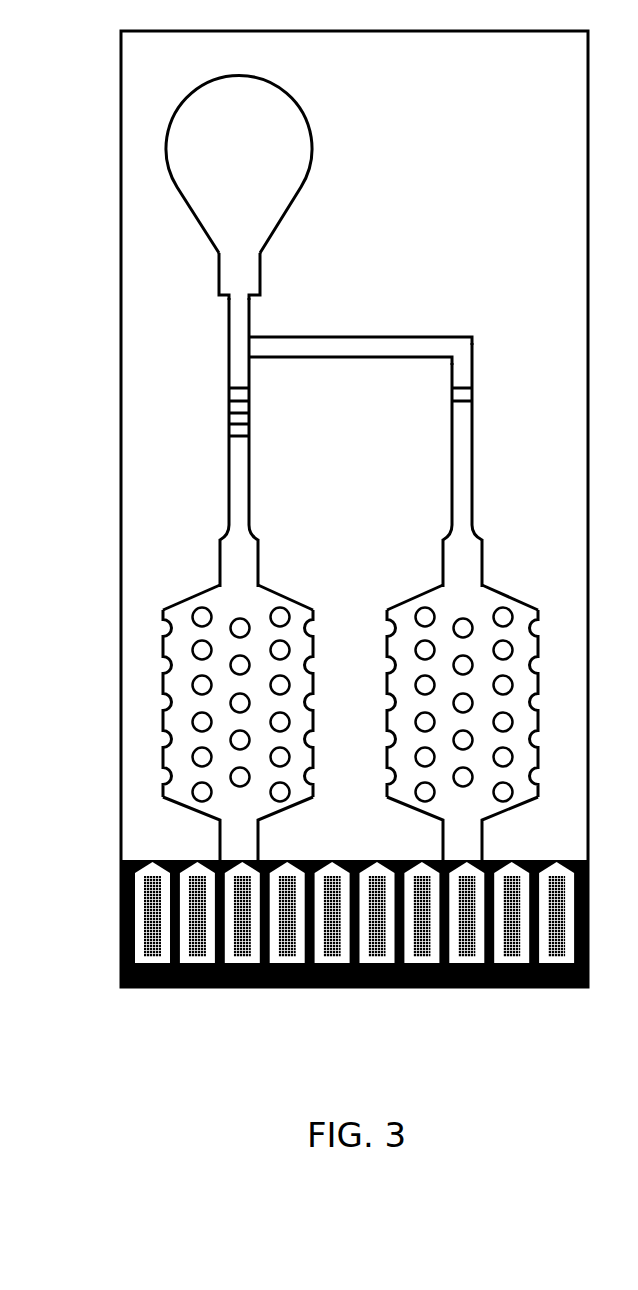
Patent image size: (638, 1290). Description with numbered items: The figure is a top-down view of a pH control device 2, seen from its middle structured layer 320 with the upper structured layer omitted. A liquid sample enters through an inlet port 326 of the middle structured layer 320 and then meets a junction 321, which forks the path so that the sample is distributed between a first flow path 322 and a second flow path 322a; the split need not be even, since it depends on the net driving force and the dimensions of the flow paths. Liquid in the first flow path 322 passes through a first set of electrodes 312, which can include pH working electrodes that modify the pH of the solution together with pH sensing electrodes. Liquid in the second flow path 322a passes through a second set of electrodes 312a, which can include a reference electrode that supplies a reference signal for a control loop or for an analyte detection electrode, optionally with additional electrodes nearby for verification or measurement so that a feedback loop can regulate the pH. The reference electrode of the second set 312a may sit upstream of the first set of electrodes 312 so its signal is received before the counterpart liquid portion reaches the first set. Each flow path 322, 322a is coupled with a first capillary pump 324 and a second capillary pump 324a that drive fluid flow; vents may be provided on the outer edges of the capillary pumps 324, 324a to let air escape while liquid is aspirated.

The pH control device 2 is at (134, 1031).
The middle structured layer 320 is at (133, 762).
The inlet port 326 is at (175, 181).
The junction 321 is at (242, 347).
The first flow path 322 is at (235, 470).
The second flow path 322a is at (458, 485).
The first set of electrodes 312 is at (213, 370).
The second set of electrodes 312a is at (474, 386).
The first capillary pump 324 is at (307, 793).
The second capillary pump 324a is at (517, 793).